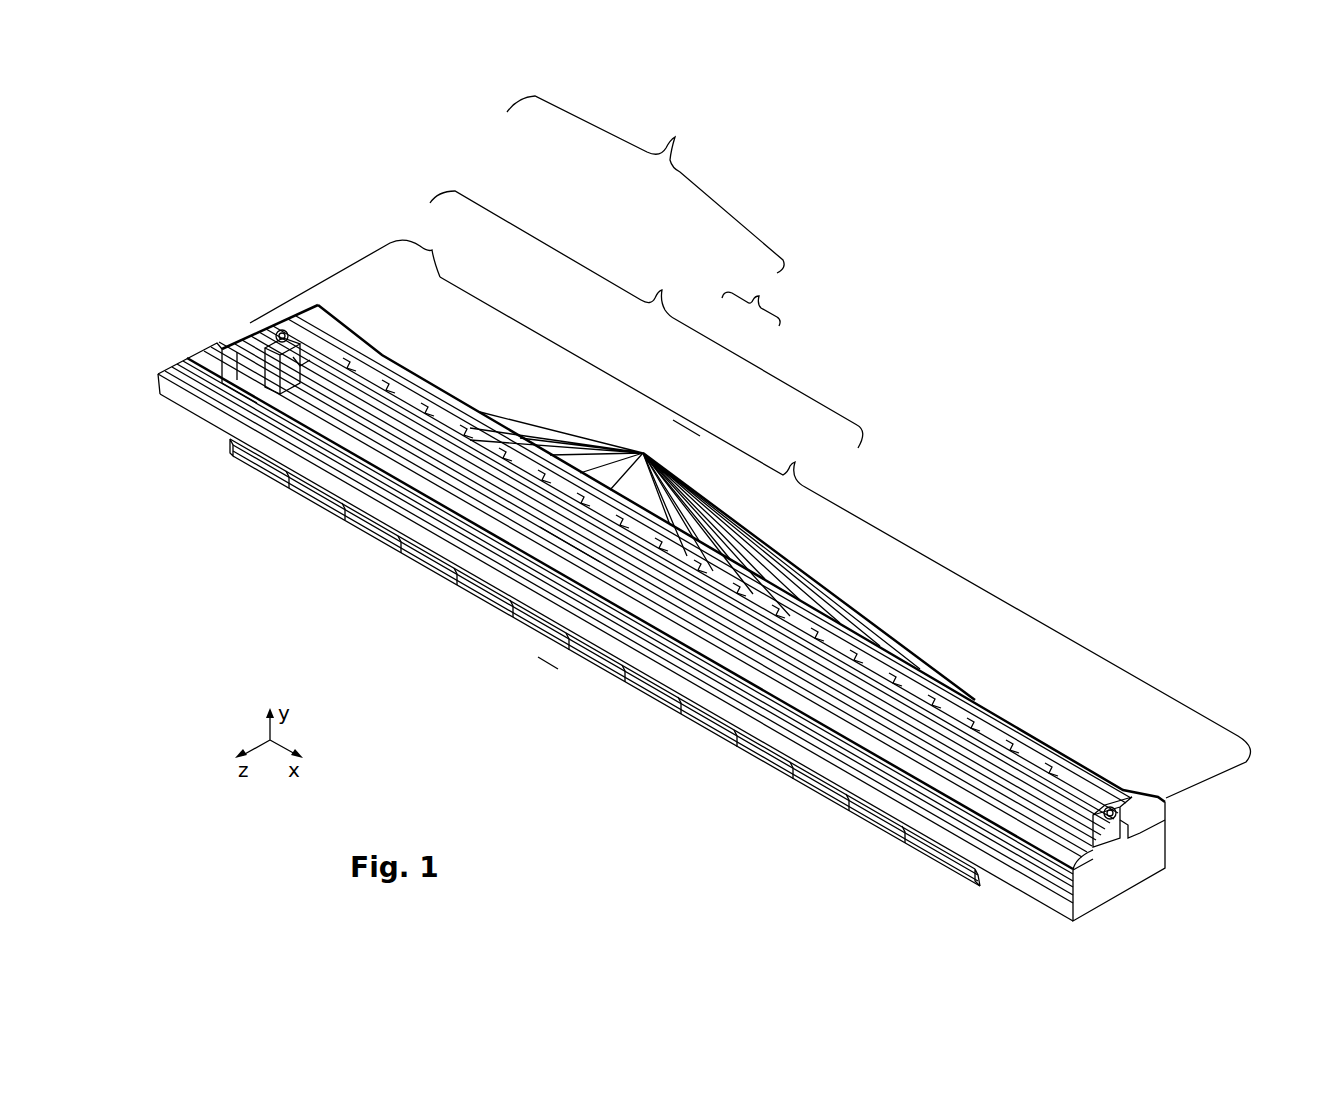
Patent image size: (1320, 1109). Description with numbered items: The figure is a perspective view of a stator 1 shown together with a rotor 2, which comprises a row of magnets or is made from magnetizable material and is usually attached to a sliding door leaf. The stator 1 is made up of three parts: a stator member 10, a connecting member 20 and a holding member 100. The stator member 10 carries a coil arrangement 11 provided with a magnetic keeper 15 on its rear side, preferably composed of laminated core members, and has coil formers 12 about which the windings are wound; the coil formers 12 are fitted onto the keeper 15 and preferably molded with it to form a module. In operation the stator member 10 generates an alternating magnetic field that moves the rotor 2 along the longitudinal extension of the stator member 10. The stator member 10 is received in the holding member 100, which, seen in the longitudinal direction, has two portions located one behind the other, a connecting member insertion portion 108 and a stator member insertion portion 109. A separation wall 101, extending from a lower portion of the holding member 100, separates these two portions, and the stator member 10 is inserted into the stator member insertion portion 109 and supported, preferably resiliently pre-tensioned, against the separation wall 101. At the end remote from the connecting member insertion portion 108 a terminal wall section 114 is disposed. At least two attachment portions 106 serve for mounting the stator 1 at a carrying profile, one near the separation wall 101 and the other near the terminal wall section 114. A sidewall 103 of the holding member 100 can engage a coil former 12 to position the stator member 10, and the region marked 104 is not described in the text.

The stator 1 is at (645, 184).
The rotor 2 is at (538, 660).
The stator member 10 is at (751, 298).
The coil arrangement 11 is at (673, 420).
The coil former 12 is at (722, 556).
The magnetic keeper 15 is at (540, 527).
The connecting member 20 is at (238, 350).
The holding member 100 is at (646, 319).
The separation wall 101 is at (323, 342).
The sidewall 103 is at (483, 527).
The left end groove 104 is at (257, 370).
The attachment portion 106 is at (293, 357).
The connecting member insertion portion 108 is at (352, 272).
The stator member insertion portion 109 is at (845, 537).
The terminal wall section 114 is at (1150, 855).